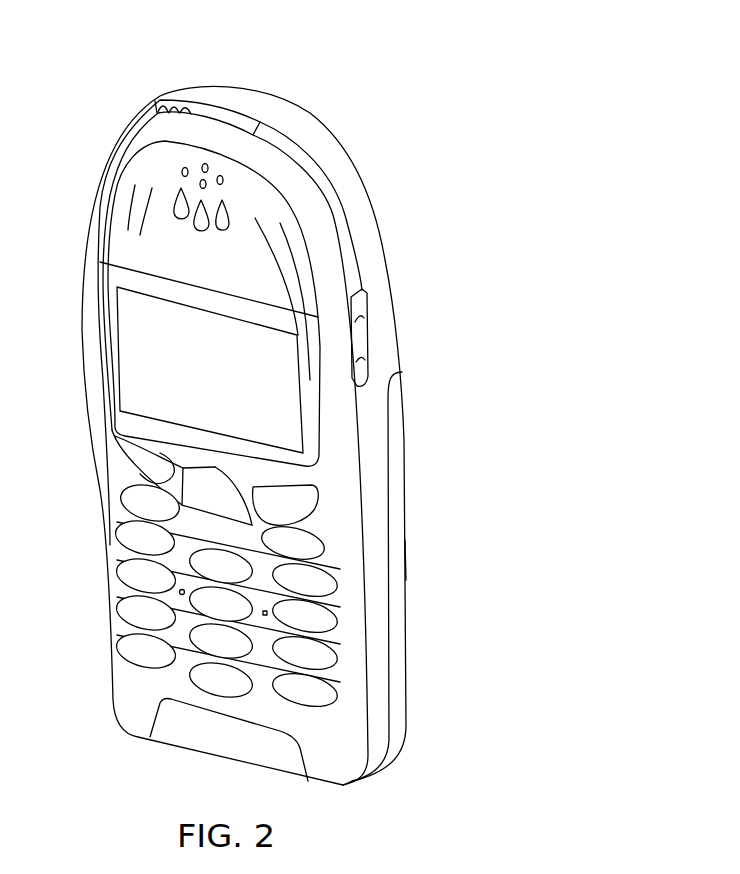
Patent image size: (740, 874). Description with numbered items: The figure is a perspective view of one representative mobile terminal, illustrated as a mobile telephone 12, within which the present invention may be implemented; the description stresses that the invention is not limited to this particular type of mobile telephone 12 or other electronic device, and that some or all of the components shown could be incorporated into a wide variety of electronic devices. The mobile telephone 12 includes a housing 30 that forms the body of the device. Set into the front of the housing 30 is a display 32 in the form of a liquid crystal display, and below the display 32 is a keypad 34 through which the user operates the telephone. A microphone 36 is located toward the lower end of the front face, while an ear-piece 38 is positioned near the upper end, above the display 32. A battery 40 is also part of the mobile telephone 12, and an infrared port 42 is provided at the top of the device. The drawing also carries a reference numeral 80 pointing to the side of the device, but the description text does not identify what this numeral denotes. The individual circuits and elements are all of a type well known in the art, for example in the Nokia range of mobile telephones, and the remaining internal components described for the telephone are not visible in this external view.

The mobile telephone 12 is at (344, 90).
The housing 30 is at (368, 226).
The display 32 is at (283, 410).
The keypad 34 is at (305, 697).
The microphone 36 is at (172, 730).
The ear-piece 38 is at (180, 188).
The battery 40 is at (400, 678).
The infrared port 42 is at (225, 112).
The antenna 80 is at (407, 557).